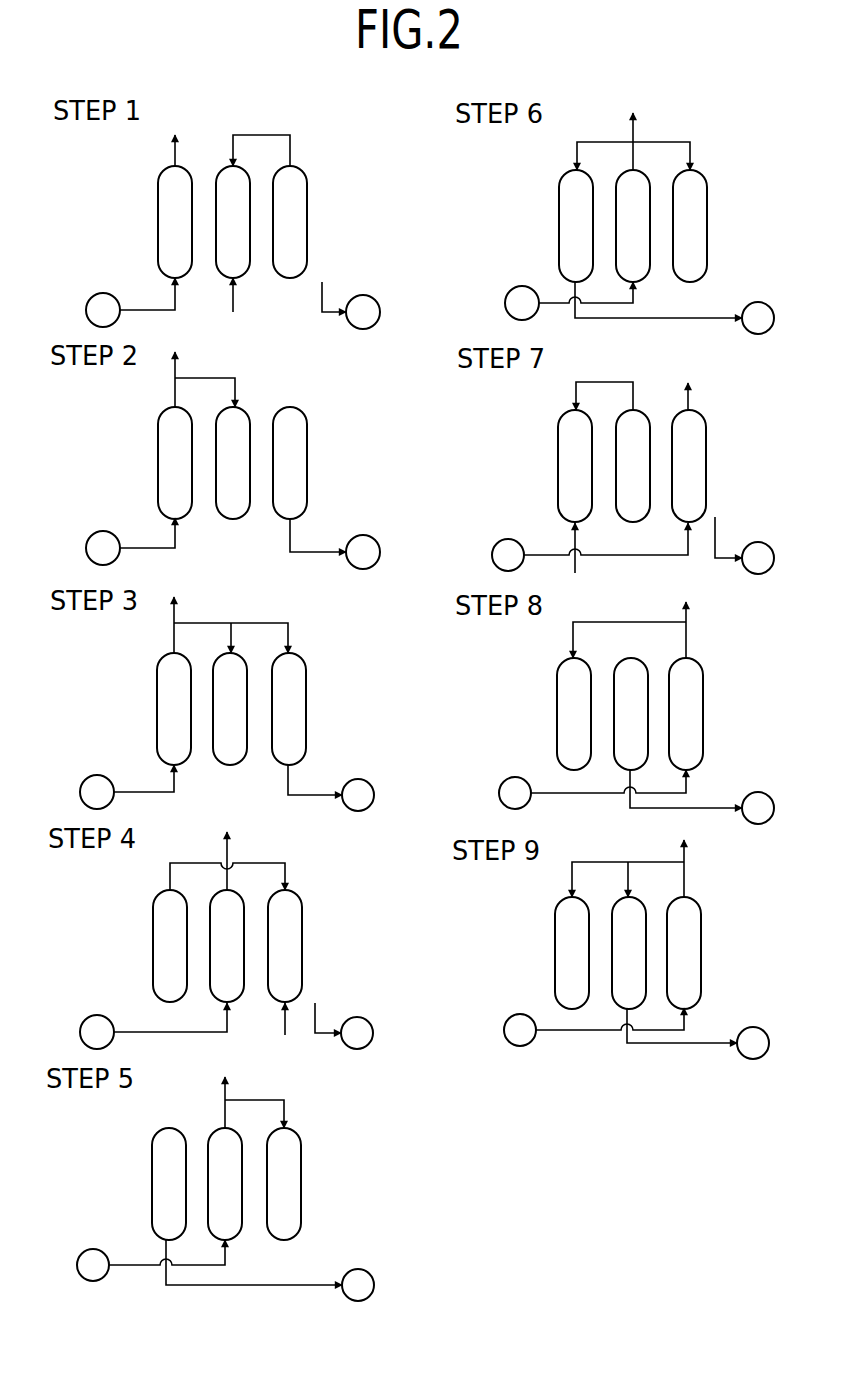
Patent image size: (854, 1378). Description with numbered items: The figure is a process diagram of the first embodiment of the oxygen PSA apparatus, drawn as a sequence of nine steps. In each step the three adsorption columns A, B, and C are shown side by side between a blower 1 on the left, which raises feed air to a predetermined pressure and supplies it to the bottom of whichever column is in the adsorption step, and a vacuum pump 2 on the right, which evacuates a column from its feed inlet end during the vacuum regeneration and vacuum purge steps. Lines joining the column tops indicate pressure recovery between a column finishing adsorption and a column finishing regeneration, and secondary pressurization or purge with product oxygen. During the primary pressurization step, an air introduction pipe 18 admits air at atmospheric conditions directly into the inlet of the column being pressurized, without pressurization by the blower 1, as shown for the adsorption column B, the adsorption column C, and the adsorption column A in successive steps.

The blower 1 is at (103, 293).
The vacuum pump 2 is at (361, 295).
The air introduction pipe 18 is at (235, 306).
The adsorption column A is at (158, 210).
The adsorption column B is at (220, 275).
The adsorption column C is at (308, 214).